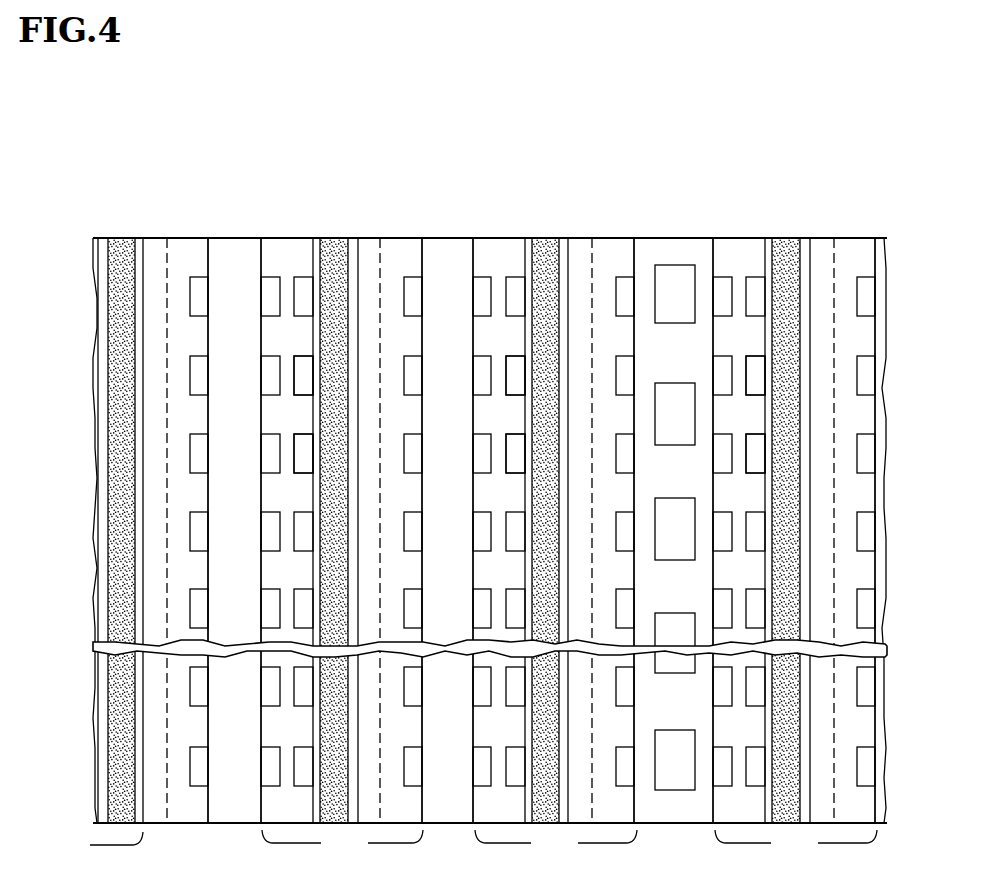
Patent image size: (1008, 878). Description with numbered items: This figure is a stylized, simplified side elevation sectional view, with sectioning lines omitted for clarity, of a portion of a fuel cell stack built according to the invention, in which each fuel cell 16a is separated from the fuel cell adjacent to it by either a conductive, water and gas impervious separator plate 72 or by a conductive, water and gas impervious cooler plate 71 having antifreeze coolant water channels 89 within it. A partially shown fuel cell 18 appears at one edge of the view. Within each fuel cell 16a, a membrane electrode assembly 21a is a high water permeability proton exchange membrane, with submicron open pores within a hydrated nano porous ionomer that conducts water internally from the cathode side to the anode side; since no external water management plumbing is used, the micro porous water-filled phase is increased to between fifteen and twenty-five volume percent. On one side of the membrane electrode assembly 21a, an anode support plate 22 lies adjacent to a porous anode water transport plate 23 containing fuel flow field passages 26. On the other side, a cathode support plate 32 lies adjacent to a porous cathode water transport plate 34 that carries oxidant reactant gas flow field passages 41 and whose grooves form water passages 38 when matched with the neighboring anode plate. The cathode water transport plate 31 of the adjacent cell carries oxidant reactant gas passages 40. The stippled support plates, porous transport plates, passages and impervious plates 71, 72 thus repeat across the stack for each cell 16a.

The fuel cell 16a is at (569, 842).
The fuel cell 18 is at (101, 843).
The membrane electrode assembly 21a is at (122, 238).
The anode support plate 22 is at (103, 240).
The anode water transport plate 23 is at (280, 245).
The fuel flow field passages 26 is at (303, 375).
The cathode water transport plate 31 is at (175, 235).
The cathode support plate 32 is at (140, 238).
The cathode water transport plate 34 is at (390, 235).
The water passages 38 is at (200, 288).
The oxidant reactant gas passages 40 is at (153, 252).
The oxidant reactant gas flow field passages 41 is at (366, 252).
The cooler plate 71 is at (670, 247).
The separator plate 72 is at (232, 253).
The antifreeze coolant water channels 89 is at (678, 308).